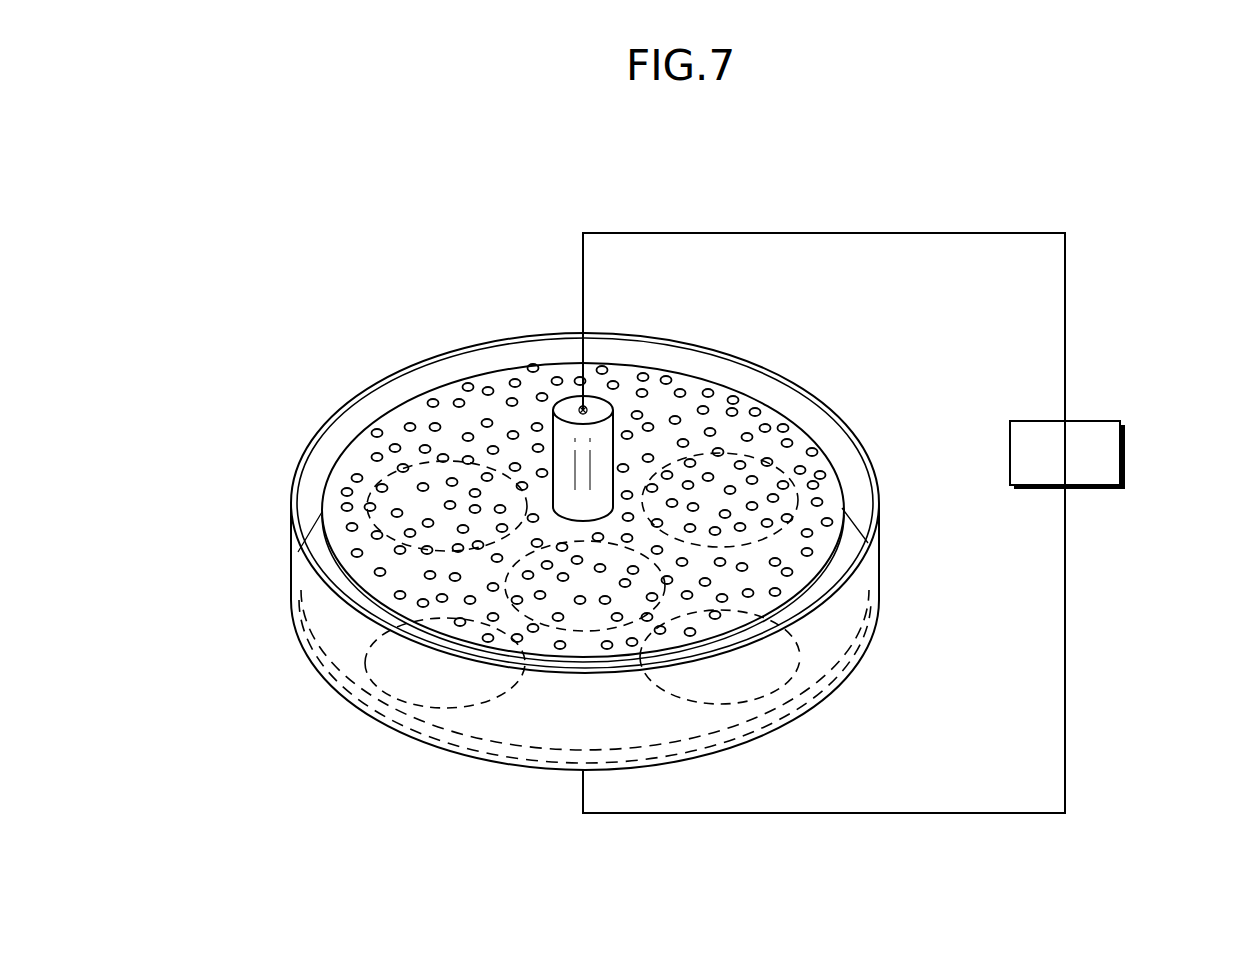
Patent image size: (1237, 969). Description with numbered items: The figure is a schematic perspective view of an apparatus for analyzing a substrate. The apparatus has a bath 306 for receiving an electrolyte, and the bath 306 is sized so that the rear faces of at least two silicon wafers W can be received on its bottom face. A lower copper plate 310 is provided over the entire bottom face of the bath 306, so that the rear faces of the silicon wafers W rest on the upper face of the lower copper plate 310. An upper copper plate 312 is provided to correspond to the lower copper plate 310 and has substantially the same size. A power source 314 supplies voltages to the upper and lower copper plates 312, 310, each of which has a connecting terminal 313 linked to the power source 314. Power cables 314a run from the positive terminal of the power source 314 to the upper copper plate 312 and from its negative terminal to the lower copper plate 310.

The bath 306 is at (291, 563).
The lower copper plate 310 is at (393, 726).
The upper copper plate 312 is at (468, 384).
The connecting terminal 313 is at (586, 410).
The power source 314 is at (1122, 453).
The power cable 314a is at (1065, 338).
The silicon wafer W is at (372, 674).